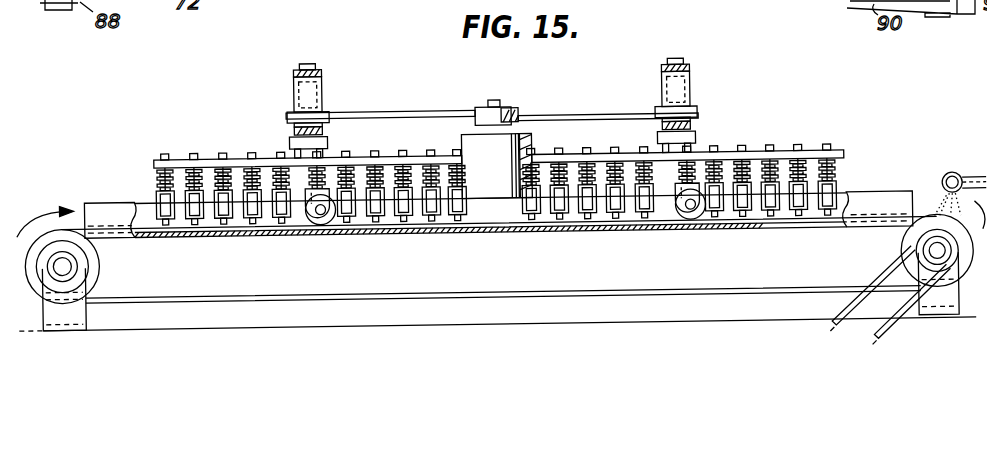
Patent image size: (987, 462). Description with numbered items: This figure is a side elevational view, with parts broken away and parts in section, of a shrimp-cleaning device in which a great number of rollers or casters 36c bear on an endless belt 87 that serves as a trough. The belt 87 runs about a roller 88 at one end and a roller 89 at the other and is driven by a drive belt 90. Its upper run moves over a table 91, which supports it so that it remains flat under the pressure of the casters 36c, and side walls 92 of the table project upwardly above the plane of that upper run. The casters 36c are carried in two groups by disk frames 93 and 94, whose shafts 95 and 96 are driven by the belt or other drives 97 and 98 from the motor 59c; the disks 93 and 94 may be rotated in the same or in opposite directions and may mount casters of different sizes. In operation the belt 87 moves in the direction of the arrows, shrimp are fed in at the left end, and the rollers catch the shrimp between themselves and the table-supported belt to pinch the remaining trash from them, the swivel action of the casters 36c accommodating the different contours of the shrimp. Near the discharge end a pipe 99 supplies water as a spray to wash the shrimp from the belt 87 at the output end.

The rollers or casters 36c is at (300, 220).
The motor 59c is at (498, 150).
The endless belt 87 is at (492, 231).
The roller 88 is at (85, 265).
The roller 89 is at (913, 244).
The drive belt 90 is at (842, 336).
The table 91 is at (462, 230).
The side walls 92 is at (132, 201).
The disk frame 93 is at (207, 154).
The disk frame 94 is at (753, 152).
The shaft 95 is at (312, 100).
The shaft 96 is at (680, 106).
The belt or other drive 97 is at (387, 110).
The belt or other drive 98 is at (590, 115).
The pipe 99 is at (970, 182).